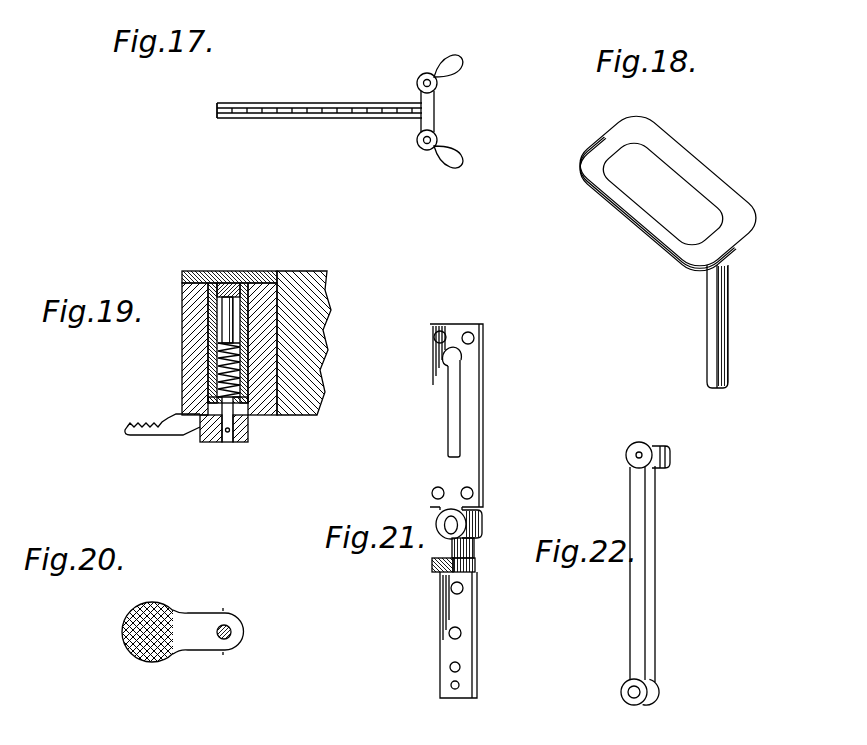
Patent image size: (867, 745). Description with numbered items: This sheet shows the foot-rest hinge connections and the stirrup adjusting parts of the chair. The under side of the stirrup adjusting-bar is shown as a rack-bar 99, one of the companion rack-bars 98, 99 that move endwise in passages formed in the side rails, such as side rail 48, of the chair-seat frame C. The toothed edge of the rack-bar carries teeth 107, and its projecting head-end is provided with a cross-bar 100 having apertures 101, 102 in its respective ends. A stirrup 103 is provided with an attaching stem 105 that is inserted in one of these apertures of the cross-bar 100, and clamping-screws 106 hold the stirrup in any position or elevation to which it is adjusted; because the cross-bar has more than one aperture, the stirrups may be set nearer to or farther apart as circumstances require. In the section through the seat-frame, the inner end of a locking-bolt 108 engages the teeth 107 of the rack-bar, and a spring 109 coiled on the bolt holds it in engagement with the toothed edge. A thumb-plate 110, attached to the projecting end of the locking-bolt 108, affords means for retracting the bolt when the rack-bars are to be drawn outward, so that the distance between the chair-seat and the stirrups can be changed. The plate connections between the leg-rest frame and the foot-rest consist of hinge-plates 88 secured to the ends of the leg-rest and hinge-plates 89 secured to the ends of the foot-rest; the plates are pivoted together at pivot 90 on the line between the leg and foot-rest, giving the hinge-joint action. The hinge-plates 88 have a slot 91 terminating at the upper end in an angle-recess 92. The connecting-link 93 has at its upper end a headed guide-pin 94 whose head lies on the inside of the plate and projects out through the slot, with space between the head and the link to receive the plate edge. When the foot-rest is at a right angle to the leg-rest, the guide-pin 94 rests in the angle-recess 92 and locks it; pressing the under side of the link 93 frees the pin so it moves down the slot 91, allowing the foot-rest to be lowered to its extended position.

In FIG. 17, the rack-bar 99 is at (320, 111).
In FIG. 17, the teeth 107 is at (217, 108).
In FIG. 17, the cross-bar 100 is at (423, 112).
In FIG. 17, the aperture 101 is at (423, 141).
In FIG. 17, the aperture 102 is at (423, 84).
In FIG. 17, the clamping-screws 106 is at (441, 72).
In FIG. 18, the stirrup 103 is at (668, 193).
In FIG. 18, the attaching stem 105 is at (790, 297).
In FIG. 19, the side rail 48 is at (183, 300).
In FIG. 19, the rack-bar 98 is at (230, 283).
In FIG. 19, the locking-bolt 108 is at (232, 337).
In FIG. 20, the locking-bolt 108 is at (232, 632).
In FIG. 19, the spring 109 is at (218, 377).
In FIG. 19, the thumb-plate 110 is at (160, 434).
In FIG. 20, the thumb-plate 110 is at (183, 621).
In FIG. 19, the chair-seat frame C is at (312, 343).
In FIG. 21, the hinge-plates 88 is at (440, 433).
In FIG. 21, the slot 91 is at (457, 408).
In FIG. 21, the angle-recess 92 is at (446, 362).
In FIG. 21, the pivot 90 is at (456, 524).
In FIG. 21, the hinge-plates 89 is at (453, 622).
In FIG. 22, the connecting-link 93 is at (642, 553).
In FIG. 22, the guide-pin 94 is at (645, 455).